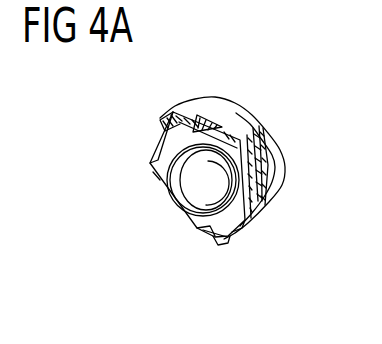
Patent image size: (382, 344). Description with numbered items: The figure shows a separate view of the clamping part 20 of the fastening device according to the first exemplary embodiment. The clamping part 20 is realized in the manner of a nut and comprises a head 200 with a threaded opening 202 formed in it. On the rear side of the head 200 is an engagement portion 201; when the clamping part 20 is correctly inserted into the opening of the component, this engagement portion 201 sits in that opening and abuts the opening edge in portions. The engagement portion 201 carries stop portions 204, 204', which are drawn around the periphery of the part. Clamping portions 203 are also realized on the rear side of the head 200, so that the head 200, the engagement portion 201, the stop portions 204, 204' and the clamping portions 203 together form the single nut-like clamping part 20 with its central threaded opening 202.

The clamping part 20 is at (197, 250).
The head 200 is at (279, 168).
The engagement portion 201 is at (253, 192).
The threaded opening 202 is at (205, 181).
The clamping portions 203 is at (171, 117).
The stop portion 204 is at (190, 181).
The stop portion 204' is at (183, 172).